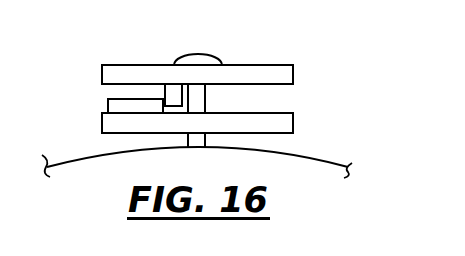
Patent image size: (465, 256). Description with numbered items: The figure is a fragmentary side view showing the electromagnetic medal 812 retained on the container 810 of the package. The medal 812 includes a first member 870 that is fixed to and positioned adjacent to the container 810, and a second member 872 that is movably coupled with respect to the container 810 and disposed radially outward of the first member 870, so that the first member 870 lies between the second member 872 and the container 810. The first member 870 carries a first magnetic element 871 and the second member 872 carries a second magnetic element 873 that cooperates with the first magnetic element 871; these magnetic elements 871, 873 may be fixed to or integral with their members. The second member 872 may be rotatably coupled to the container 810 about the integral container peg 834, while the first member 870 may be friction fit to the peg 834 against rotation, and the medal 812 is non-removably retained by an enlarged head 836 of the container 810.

The container 810 is at (378, 175).
The electromagnetic medal 812 is at (230, 78).
The first member 870 is at (320, 120).
The second member 872 is at (320, 77).
The integral container peg 834 is at (200, 98).
The enlarged head 836 is at (187, 53).
The second magnetic element 873 is at (164, 95).
The first magnetic element 871 is at (108, 103).